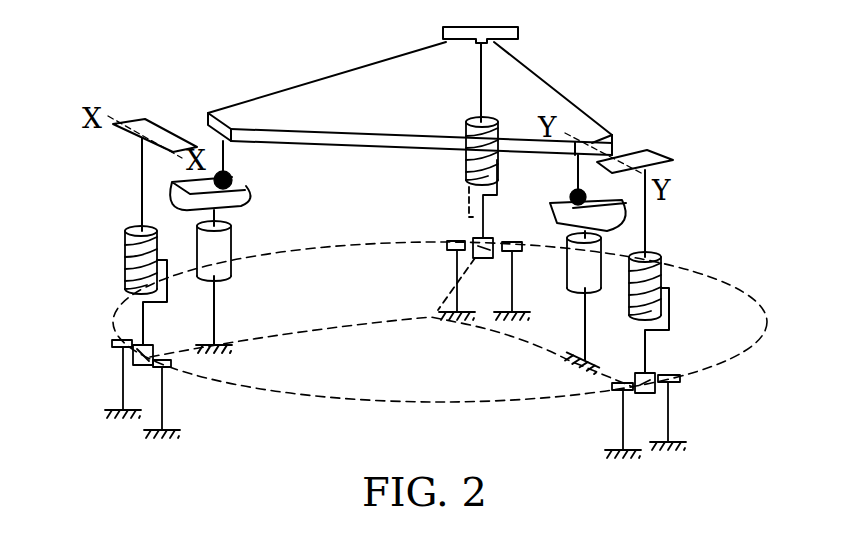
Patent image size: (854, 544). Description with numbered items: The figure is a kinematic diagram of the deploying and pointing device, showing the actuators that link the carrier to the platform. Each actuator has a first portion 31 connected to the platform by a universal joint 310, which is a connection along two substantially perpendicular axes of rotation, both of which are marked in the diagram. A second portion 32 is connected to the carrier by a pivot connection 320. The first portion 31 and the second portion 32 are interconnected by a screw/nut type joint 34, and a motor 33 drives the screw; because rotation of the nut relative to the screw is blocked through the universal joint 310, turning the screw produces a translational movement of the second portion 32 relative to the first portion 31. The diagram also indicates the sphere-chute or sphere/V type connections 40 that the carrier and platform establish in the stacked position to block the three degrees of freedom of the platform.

The first portion 31 is at (140, 184).
The second portion 32 is at (140, 319).
The pivot connection 320 is at (170, 372).
The sphere-chute connection 40 is at (223, 172).
The universal joint 310 is at (660, 150).
The screw/nut type joint 34 is at (658, 253).
The motor 33 is at (666, 395).